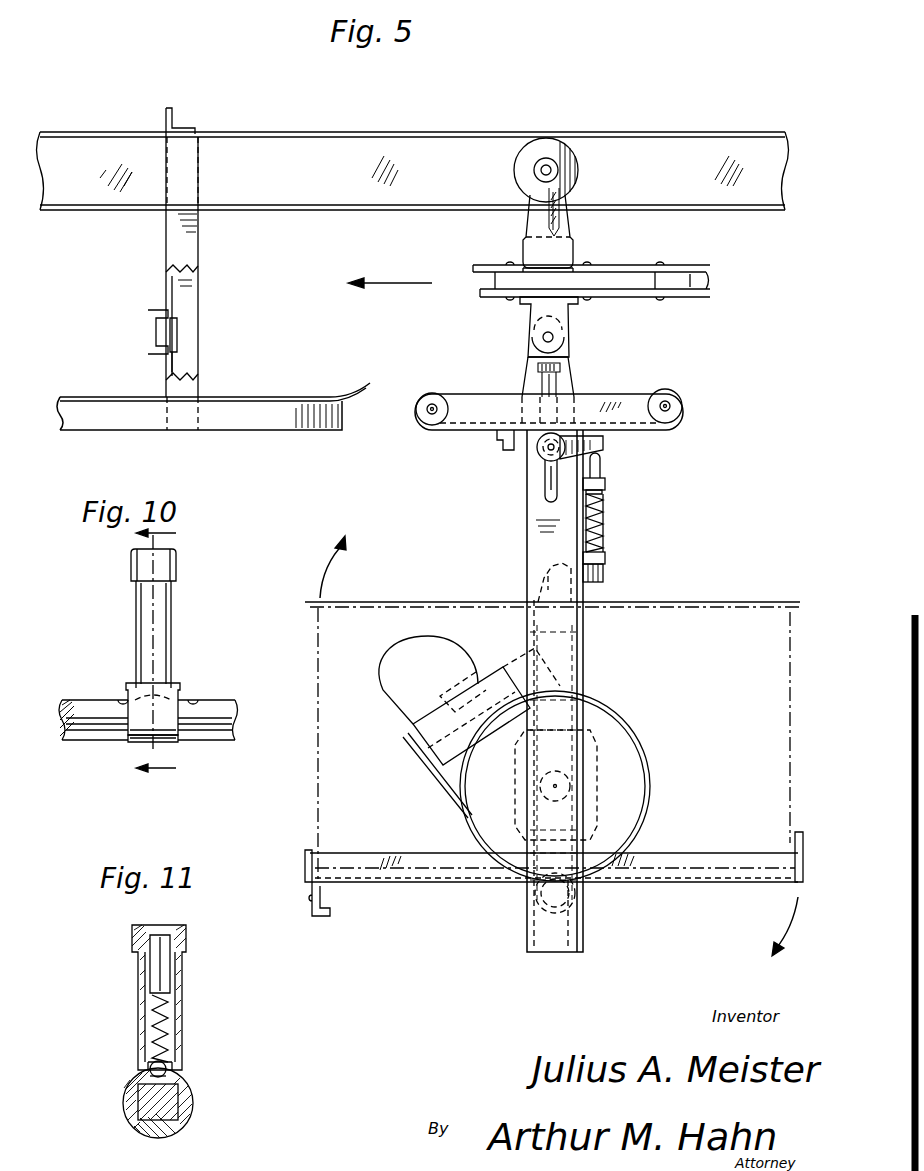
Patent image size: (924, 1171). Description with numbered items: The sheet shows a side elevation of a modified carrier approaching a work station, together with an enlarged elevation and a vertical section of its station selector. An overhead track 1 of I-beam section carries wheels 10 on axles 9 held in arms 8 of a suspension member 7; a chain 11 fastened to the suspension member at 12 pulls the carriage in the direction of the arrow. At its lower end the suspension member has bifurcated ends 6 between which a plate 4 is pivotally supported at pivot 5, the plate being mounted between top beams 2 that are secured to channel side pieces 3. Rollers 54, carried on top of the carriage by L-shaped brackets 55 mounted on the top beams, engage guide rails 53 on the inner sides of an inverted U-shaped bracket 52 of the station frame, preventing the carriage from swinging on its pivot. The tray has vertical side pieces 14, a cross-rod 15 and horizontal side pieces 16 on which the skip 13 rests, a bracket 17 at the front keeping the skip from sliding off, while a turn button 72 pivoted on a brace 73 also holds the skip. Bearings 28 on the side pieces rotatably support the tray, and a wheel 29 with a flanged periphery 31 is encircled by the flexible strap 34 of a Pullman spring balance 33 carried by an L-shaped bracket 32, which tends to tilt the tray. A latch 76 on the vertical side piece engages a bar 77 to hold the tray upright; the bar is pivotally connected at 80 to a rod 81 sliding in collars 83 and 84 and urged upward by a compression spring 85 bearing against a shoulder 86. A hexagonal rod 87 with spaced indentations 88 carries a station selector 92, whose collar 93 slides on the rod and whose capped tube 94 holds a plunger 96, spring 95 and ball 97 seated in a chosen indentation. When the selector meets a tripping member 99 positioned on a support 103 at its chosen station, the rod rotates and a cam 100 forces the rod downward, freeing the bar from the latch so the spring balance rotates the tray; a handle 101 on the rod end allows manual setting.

In FIG. 5, the overhead track 1 is at (447, 150).
In FIG. 5, the top beams 2 is at (512, 440).
In FIG. 5, the channel side pieces 3 is at (530, 524).
In FIG. 5, the plate 4 is at (566, 351).
In FIG. 5, the pivot 5 is at (553, 339).
In FIG. 5, the bifurcated ends 6 is at (546, 305).
In FIG. 5, the suspension member 7 is at (530, 246).
In FIG. 5, the arms 8 is at (560, 218).
In FIG. 5, the axles 9 is at (540, 174).
In FIG. 5, the wheels 10 is at (576, 165).
In FIG. 5, the chain 11 is at (598, 280).
In FIG. 5, the chain fastening 12 is at (555, 278).
In FIG. 5, the skip 13 is at (712, 614).
In FIG. 5, the vertical side pieces 14 is at (584, 632).
In FIG. 5, the cross-rod 15 is at (584, 902).
In FIG. 5, the horizontal side pieces 16 is at (720, 882).
In FIG. 5, the bracket 17 is at (794, 846).
In FIG. 5, the bearings 28 is at (598, 812).
In FIG. 5, the wheels 29 is at (634, 780).
In FIG. 5, the flanged periphery 31 is at (640, 746).
In FIG. 5, the L-shaped bracket 32 is at (433, 742).
In FIG. 5, the Pullman spring balance 33 is at (456, 674).
In FIG. 5, the flexible strap 34 is at (446, 788).
In FIG. 5, the inverted U-shaped bracket 52 is at (200, 213).
In FIG. 5, the guide rails 53 is at (290, 400).
In FIG. 5, the rollers 54 is at (433, 393).
In FIG. 5, the L-shaped brackets 55 is at (470, 408).
In FIG. 5, the turn button 72 is at (304, 878).
In FIG. 5, the brace 73 is at (324, 920).
In FIG. 5, the latch 76 is at (545, 582).
In FIG. 5, the bar 77 is at (566, 568).
In FIG. 5, the pivotal connection 80 is at (605, 574).
In FIG. 5, the rod 81 is at (600, 466).
In FIG. 5, the collar 83 is at (606, 484).
In FIG. 5, the collar 84 is at (607, 555).
In FIG. 5, the compression spring 85 is at (606, 526).
In FIG. 5, the shoulder 86 is at (604, 496).
In FIG. 10, the hexagonal rod 87 is at (104, 740).
In FIG. 11, the hexagonal rod 87 is at (168, 1110).
In FIG. 10, the indentations 88 is at (122, 698).
In FIG. 11, the indentations 88 is at (130, 1100).
In FIG. 5, the station selector 92 is at (551, 388).
In FIG. 10, the station selector 92 is at (124, 612).
In FIG. 11, the station selector 92 is at (186, 988).
In FIG. 10, the collar 93 is at (152, 760).
In FIG. 11, the collar 93 is at (124, 1081).
In FIG. 10, the capped tube 94 is at (160, 652).
In FIG. 11, the capped tube 94 is at (176, 1020).
In FIG. 11, the spring 95 is at (150, 1032).
In FIG. 11, the plunger 96 is at (150, 982).
In FIG. 10, the ball 97 is at (180, 698).
In FIG. 11, the ball 97 is at (166, 1066).
In FIG. 5, the tripping member 99 is at (171, 363).
In FIG. 5, the cam 100 is at (588, 440).
In FIG. 5, the handle 101 is at (546, 487).
In FIG. 5, the support 103 is at (150, 344).